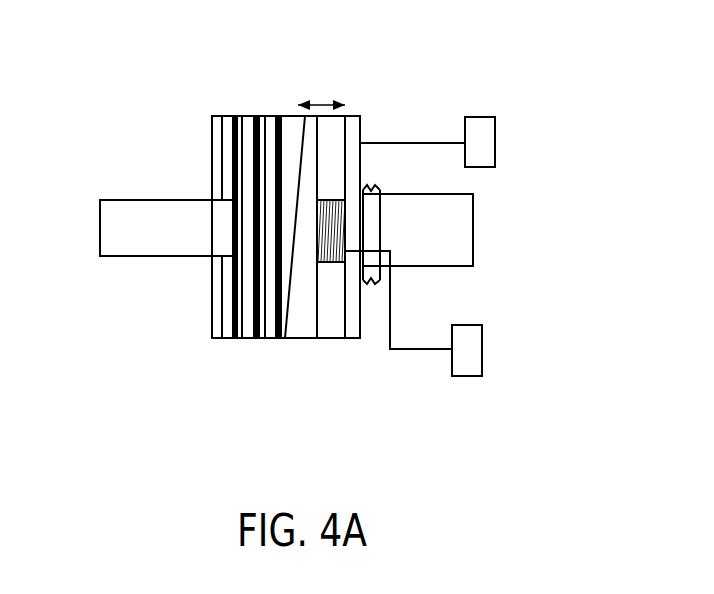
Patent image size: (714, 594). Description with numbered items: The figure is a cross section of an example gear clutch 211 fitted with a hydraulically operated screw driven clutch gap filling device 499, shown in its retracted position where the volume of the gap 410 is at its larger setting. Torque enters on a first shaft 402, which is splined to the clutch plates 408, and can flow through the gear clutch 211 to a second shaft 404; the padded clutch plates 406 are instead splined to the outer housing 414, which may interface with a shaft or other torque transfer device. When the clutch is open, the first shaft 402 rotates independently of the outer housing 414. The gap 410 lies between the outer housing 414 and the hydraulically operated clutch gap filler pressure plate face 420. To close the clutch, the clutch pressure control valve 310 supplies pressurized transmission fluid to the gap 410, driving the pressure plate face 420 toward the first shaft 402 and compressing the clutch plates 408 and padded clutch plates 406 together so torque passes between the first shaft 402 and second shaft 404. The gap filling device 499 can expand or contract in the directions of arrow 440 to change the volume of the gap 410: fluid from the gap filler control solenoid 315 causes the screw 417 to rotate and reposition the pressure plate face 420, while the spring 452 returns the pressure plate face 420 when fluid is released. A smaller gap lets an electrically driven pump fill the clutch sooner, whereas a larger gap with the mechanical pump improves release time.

The gear clutch 211 is at (492, 55).
The clutch pressure control valve 310 is at (472, 117).
The gap filler control solenoid 315 is at (482, 361).
The first shaft 402 is at (127, 256).
The second shaft 404 is at (427, 267).
The padded clutch plates 406 is at (271, 330).
The clutch plates 408 is at (270, 128).
The gap 410 is at (355, 322).
The outer housing 414 is at (361, 118).
The screw 417 is at (332, 262).
The hydraulically operated clutch gap filler pressure plate face 420 is at (350, 128).
The arrow 440 is at (323, 102).
The spring 452 is at (380, 190).
The hydraulically operated screw driven clutch gap filling device 499 is at (288, 112).